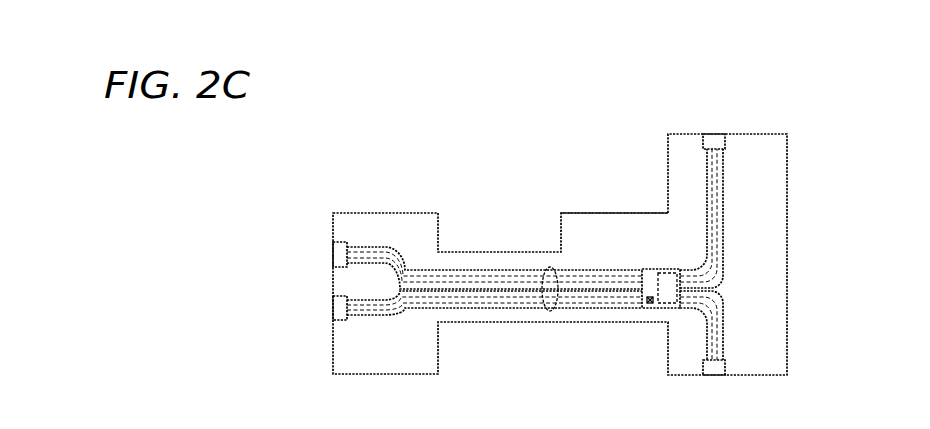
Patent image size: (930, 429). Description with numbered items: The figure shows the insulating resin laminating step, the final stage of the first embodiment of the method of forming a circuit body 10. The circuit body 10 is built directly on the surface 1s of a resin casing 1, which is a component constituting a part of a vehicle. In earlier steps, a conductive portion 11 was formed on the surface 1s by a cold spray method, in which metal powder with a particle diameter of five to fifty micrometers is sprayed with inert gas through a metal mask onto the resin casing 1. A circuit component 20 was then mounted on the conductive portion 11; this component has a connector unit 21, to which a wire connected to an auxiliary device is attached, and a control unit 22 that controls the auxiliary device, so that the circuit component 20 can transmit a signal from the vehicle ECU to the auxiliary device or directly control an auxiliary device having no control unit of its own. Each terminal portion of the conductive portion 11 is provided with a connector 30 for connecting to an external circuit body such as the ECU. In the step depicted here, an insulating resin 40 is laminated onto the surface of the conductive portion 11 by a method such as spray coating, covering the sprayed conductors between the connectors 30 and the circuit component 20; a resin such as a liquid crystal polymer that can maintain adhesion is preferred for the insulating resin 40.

The resin casing 1 is at (608, 213).
The surface of the resin casing 1s is at (578, 229).
The circuit body 10 is at (748, 256).
The conductive portion 11 is at (553, 311).
The circuit component 20 is at (657, 268).
The connector unit 21 is at (652, 309).
The control unit 22 is at (665, 310).
The connector 30 is at (332, 253).
The insulating resin 40 is at (507, 270).